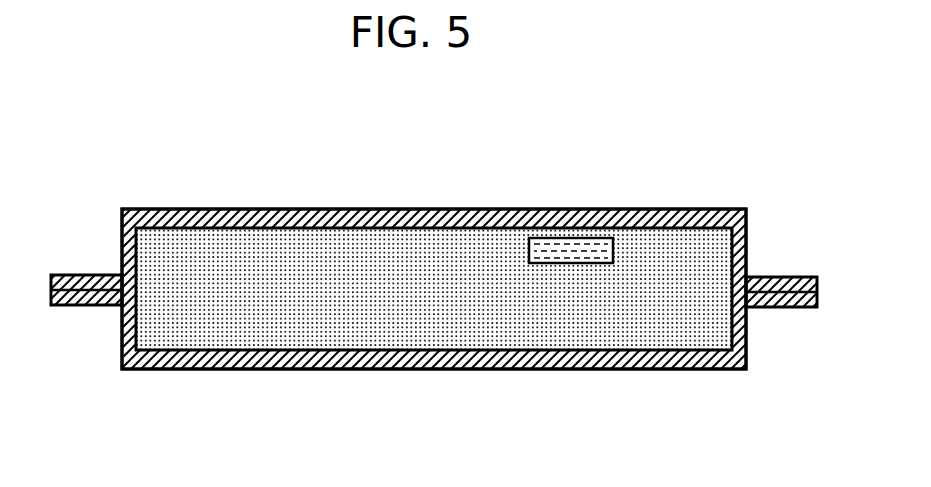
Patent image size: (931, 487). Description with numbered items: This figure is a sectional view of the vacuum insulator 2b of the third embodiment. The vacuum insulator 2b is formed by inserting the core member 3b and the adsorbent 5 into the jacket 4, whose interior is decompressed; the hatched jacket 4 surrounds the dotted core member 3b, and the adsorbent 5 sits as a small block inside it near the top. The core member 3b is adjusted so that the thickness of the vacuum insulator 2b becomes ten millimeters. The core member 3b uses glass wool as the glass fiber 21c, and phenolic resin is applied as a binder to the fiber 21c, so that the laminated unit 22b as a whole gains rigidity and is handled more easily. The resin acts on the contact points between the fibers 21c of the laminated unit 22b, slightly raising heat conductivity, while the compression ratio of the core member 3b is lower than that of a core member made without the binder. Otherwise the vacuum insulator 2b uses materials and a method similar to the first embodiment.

The vacuum insulator 2b is at (344, 194).
The glass fiber 21c is at (174, 254).
The laminated unit 22b is at (401, 308).
The core member 3b is at (540, 333).
The jacket 4 is at (673, 210).
The adsorbent 5 is at (565, 237).